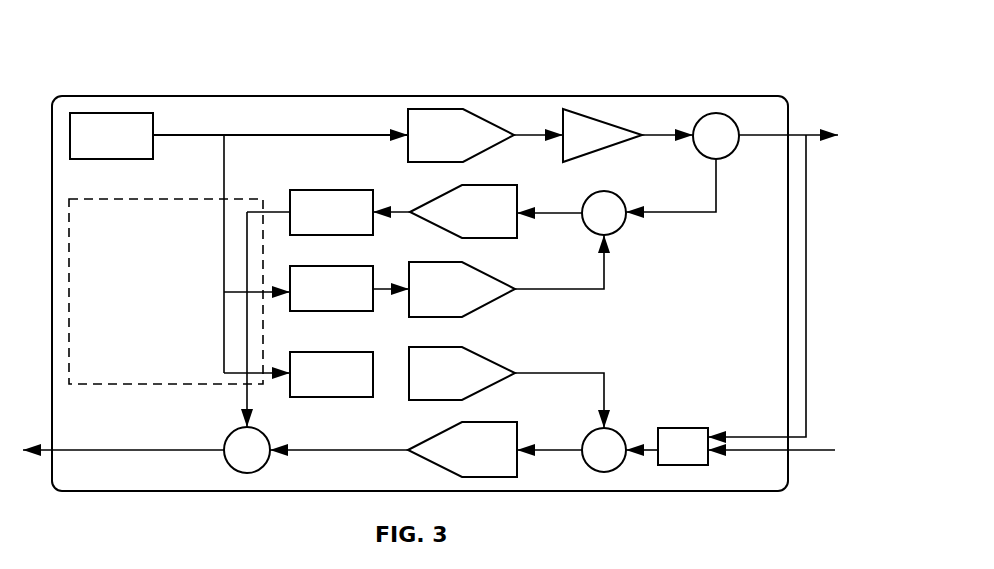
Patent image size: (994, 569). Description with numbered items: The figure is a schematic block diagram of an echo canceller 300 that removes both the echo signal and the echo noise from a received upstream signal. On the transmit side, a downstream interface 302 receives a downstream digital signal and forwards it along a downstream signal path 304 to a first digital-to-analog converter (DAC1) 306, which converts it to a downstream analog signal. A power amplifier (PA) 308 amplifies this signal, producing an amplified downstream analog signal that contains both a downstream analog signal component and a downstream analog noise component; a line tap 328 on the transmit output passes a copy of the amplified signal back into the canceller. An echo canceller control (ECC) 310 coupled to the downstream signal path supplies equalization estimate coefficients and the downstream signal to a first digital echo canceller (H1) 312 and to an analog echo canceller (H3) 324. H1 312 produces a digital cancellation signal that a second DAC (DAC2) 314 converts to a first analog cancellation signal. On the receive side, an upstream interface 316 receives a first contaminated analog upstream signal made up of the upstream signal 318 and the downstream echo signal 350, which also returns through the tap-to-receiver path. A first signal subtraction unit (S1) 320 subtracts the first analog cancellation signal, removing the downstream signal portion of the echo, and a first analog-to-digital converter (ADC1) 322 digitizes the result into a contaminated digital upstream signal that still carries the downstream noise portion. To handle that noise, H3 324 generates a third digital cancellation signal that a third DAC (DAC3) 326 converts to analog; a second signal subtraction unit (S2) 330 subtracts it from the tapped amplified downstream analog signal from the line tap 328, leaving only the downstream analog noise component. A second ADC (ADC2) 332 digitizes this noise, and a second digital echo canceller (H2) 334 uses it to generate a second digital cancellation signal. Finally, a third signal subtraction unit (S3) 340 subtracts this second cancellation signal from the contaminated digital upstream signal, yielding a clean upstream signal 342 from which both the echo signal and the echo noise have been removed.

The echo canceller 300 is at (203, 90).
The downstream interface 302 is at (104, 113).
The downstream signal path 304 is at (272, 133).
The first digital-to-analog converter (DAC1) 306 is at (468, 109).
The power amplifier (PA) 308 is at (560, 109).
The echo canceller control (ECC) 310 is at (206, 199).
The first digital echo canceller (H1) 312 is at (316, 352).
The second DAC (DAC2) 314 is at (490, 360).
The upstream interface 316 is at (671, 428).
The upstream signal 318 is at (802, 451).
The first signal subtraction unit (S1) 320 is at (586, 467).
The first analog-to-digital converter (ADC1) 322 is at (414, 446).
The analog echo canceller (H3) 324 is at (324, 266).
The third DAC (DAC3) 326 is at (490, 275).
The line tap 328 is at (706, 116).
The second signal subtraction unit (S2) 330 is at (597, 191).
The second ADC (ADC2) 332 is at (415, 210).
The second digital echo canceller (H2) 334 is at (320, 190).
The third signal subtraction unit (S3) 340 is at (230, 440).
The clean upstream signal 342 is at (120, 450).
The downstream echo signal 350 is at (806, 308).